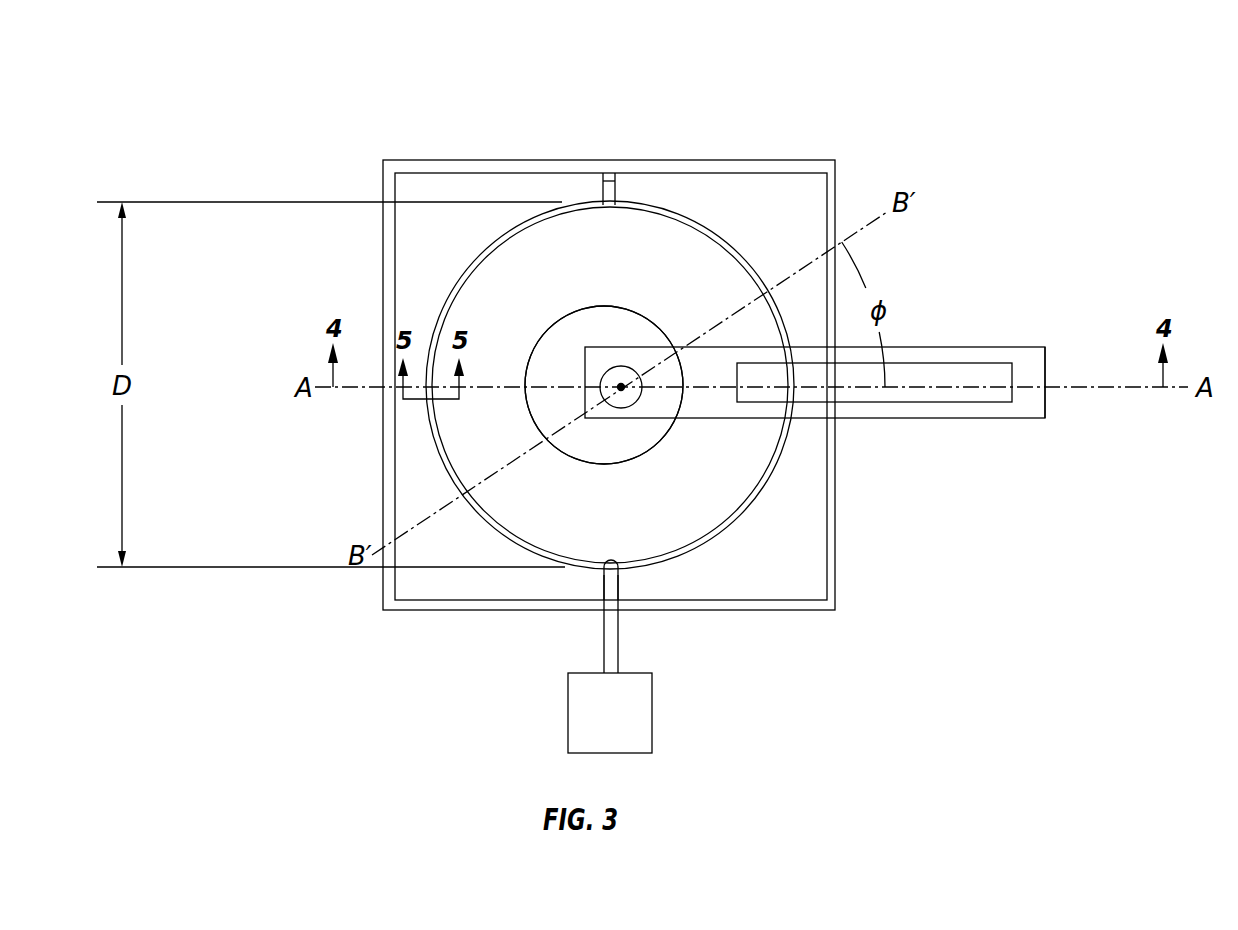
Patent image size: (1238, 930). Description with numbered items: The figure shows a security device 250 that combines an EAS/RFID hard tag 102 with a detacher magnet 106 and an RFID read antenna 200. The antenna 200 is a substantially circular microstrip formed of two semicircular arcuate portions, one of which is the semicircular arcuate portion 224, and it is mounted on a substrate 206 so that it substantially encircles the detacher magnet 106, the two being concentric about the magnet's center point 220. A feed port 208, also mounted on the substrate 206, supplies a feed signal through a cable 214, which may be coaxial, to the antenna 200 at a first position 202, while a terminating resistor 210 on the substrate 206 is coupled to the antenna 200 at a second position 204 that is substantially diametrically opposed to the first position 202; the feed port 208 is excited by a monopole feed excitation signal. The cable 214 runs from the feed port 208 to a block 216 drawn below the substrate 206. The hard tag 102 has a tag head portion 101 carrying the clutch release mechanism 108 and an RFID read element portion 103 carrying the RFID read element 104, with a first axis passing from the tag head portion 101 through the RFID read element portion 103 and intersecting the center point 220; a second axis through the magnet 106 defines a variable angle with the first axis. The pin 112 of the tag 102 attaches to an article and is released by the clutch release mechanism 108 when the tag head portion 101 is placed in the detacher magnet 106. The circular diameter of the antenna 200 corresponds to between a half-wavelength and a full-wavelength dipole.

The security device 250 is at (341, 68).
The substrate 206 is at (410, 265).
The RFID read antenna 200 is at (718, 545).
The semicircular arcuate portion 224 is at (738, 245).
The detacher magnet 106 is at (542, 332).
The tag head portion 101 is at (636, 308).
The center point 220 is at (628, 404).
The clutch release mechanism 108 is at (621, 410).
The combination EAS/RFID hard tag 102 is at (900, 418).
The RFID read element portion 103 is at (1008, 347).
The RFID read element 104 is at (922, 378).
The second position 204 is at (599, 203).
The terminating resistor 210 is at (617, 181).
The cable 214 is at (620, 640).
The first position 202 is at (613, 567).
The feed port 208 is at (600, 600).
The pump 216 is at (652, 712).
The pin 112 is at (487, 462).